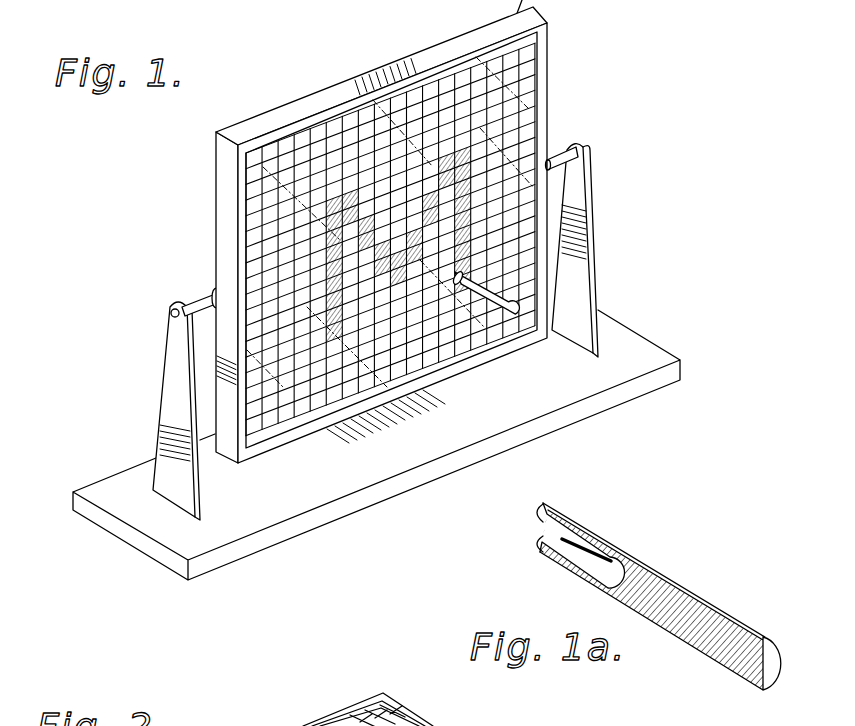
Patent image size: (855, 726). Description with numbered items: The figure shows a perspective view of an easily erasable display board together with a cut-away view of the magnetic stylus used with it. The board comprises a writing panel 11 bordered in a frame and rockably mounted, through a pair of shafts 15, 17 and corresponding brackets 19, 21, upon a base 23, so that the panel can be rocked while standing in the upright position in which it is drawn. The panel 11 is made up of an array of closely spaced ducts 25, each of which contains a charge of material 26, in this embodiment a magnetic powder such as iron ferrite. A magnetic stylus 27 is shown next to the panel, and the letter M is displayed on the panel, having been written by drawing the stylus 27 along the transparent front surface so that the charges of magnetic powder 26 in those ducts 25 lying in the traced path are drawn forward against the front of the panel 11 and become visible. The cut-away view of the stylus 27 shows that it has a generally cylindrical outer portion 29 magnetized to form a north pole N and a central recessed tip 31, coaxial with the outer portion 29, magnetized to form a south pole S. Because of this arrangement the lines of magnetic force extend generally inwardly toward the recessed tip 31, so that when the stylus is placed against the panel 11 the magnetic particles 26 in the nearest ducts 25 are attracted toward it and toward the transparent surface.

In FIG. 1, the writing panel 11 is at (405, 231).
In FIG. 1, the shaft 15 is at (198, 303).
In FIG. 1, the shaft 17 is at (563, 145).
In FIG. 1, the bracket 19 is at (168, 377).
In FIG. 1, the bracket 21 is at (588, 227).
In FIG. 1, the base 23 is at (626, 400).
In FIG. 1, the duct 25 is at (390, 239).
In FIG. 1, the charge of material 26 is at (314, 147).
In FIG. 1, the magnetic stylus 27 is at (503, 314).
In FIG. 1A, the magnetic stylus 27 is at (656, 578).
In FIG. 1A, the outer portion 29 is at (546, 503).
In FIG. 1A, the recessed tip 31 is at (573, 527).
In FIG. 1A, the north pole N is at (555, 504).
In FIG. 1A, the south pole S is at (570, 540).